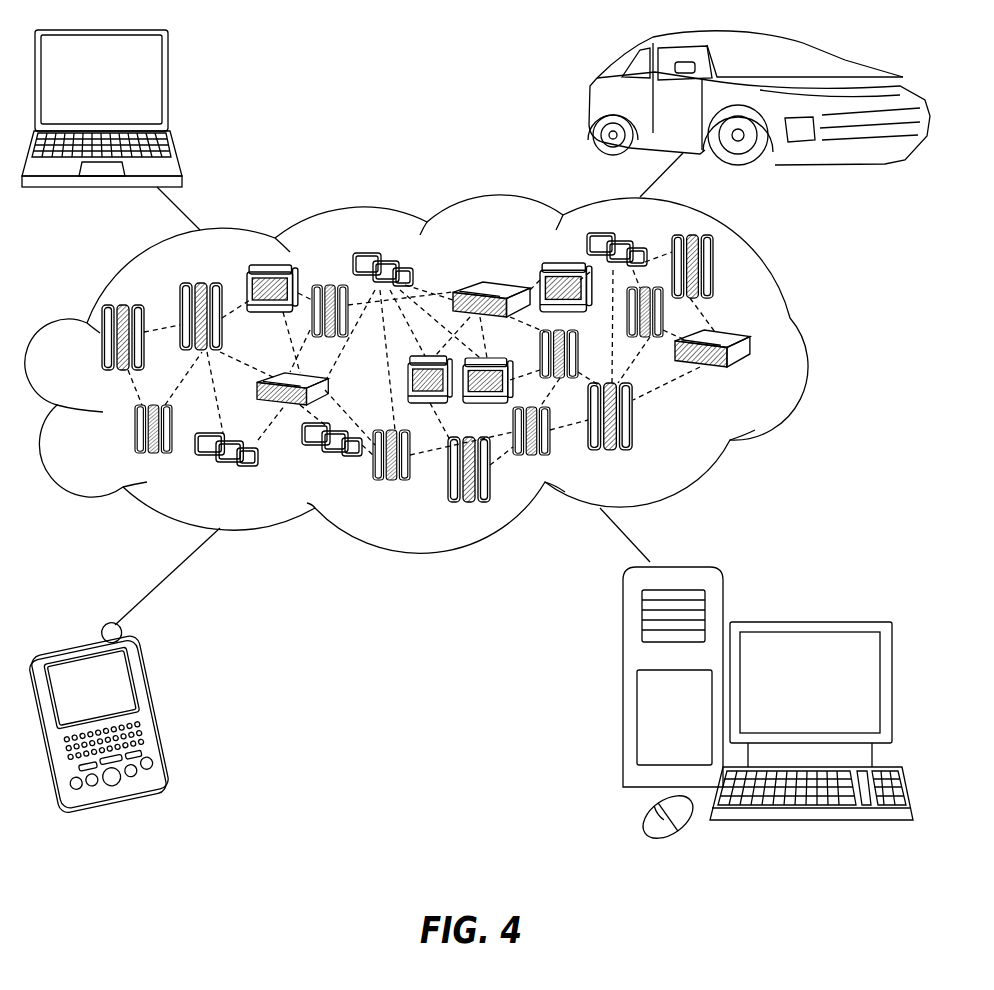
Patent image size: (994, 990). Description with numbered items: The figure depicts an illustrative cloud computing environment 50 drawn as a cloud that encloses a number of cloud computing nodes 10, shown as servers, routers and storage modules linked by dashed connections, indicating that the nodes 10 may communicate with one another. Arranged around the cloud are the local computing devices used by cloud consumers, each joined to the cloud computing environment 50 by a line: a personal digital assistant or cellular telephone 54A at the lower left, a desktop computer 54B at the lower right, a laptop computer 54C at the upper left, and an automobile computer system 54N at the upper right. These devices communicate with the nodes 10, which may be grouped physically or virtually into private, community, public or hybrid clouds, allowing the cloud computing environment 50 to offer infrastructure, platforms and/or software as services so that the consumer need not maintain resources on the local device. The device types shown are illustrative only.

The cloud computing node 10 is at (763, 375).
The cloud computing environment 50 is at (800, 345).
The personal digital assistant (PDA) or cellular telephone 54A is at (157, 710).
The desktop computer 54B is at (807, 622).
The laptop computer 54C is at (168, 92).
The automobile computer system 54N is at (593, 100).